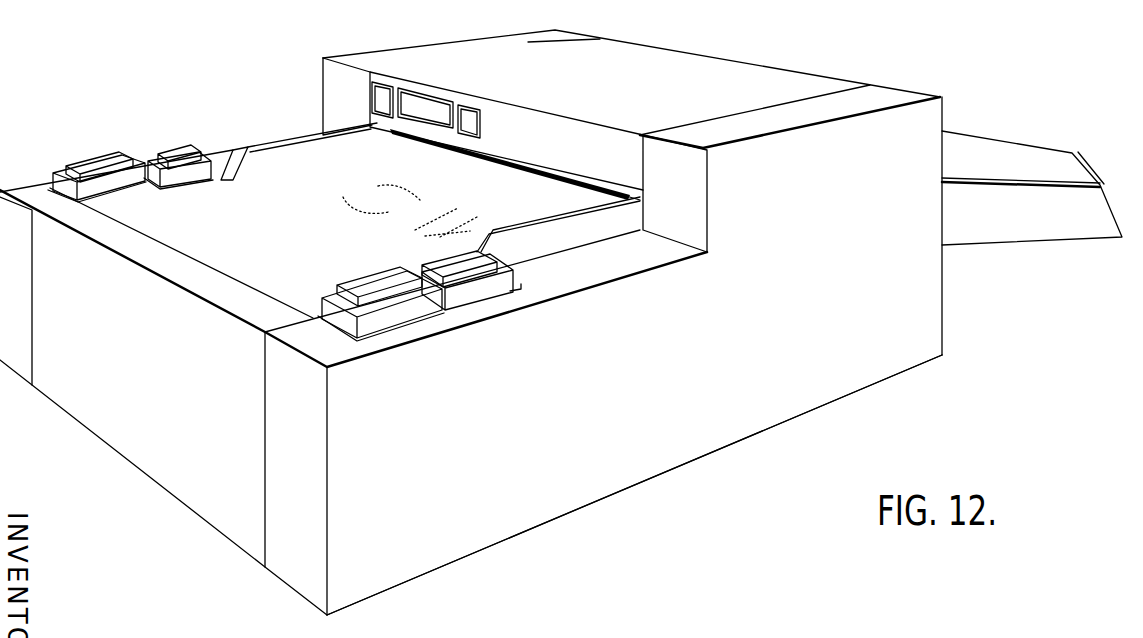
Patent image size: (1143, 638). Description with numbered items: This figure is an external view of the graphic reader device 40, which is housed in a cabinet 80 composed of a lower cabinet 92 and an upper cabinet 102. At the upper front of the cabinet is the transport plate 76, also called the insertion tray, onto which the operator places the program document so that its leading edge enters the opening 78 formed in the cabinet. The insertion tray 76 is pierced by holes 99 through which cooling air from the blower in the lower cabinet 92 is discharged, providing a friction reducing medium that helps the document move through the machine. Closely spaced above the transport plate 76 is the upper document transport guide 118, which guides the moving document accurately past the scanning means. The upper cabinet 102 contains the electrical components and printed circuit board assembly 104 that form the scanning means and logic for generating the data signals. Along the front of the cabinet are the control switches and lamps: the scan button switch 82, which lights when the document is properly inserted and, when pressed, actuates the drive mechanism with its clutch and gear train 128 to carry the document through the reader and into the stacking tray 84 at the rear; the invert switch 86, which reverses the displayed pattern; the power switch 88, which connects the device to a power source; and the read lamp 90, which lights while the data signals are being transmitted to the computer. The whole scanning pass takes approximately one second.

The graphic reader device 40 is at (263, 103).
The transport plate 76 is at (255, 266).
The opening 78 is at (477, 162).
The cabinet 80 is at (676, 470).
The scan button switch 82 is at (348, 283).
The stacking tray 84 is at (1022, 244).
The invert switch 86 is at (172, 146).
The power switch 88 is at (76, 170).
The read lamp 90 is at (438, 262).
The lower cabinet 92 is at (168, 394).
The holes 99 is at (390, 213).
The upper cabinet 102 is at (484, 42).
The printed circuit board assembly 104 is at (720, 90).
The upper document transport guide 118 is at (536, 176).
The clutch and gear train 128 is at (832, 332).